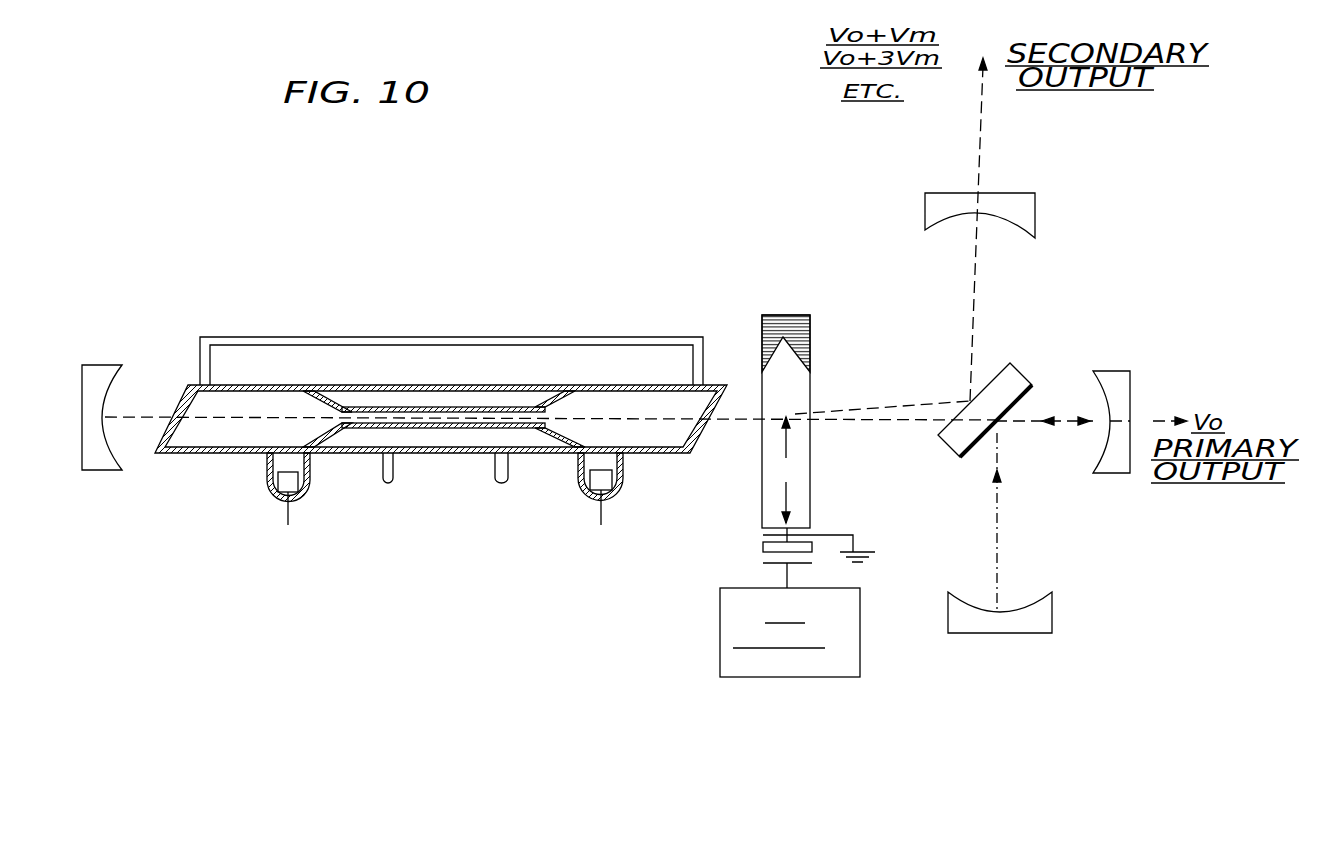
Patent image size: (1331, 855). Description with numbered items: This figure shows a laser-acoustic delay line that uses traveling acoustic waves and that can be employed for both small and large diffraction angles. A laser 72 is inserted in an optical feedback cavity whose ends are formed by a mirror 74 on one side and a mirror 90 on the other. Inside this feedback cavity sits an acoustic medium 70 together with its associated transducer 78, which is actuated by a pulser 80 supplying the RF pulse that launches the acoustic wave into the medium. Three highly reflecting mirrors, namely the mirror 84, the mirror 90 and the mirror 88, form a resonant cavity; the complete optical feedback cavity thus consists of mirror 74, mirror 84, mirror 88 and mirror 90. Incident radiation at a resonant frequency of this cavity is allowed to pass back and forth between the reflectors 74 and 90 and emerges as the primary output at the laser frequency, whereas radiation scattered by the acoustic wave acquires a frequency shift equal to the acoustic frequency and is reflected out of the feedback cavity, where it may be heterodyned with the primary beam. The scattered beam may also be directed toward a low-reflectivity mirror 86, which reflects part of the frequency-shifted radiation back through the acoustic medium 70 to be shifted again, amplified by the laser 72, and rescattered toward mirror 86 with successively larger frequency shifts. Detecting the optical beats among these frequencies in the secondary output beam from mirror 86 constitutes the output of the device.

The acoustic medium 70 is at (812, 462).
The laser 72 is at (227, 452).
The mirror 74 is at (108, 472).
The transducer 78 is at (763, 545).
The pulser 80 is at (852, 660).
The highly reflecting mirror 84 is at (1017, 372).
The low-reflectivity mirror 86 is at (1030, 218).
The highly reflecting mirror 88 is at (1067, 577).
The mirror 90 is at (1110, 467).